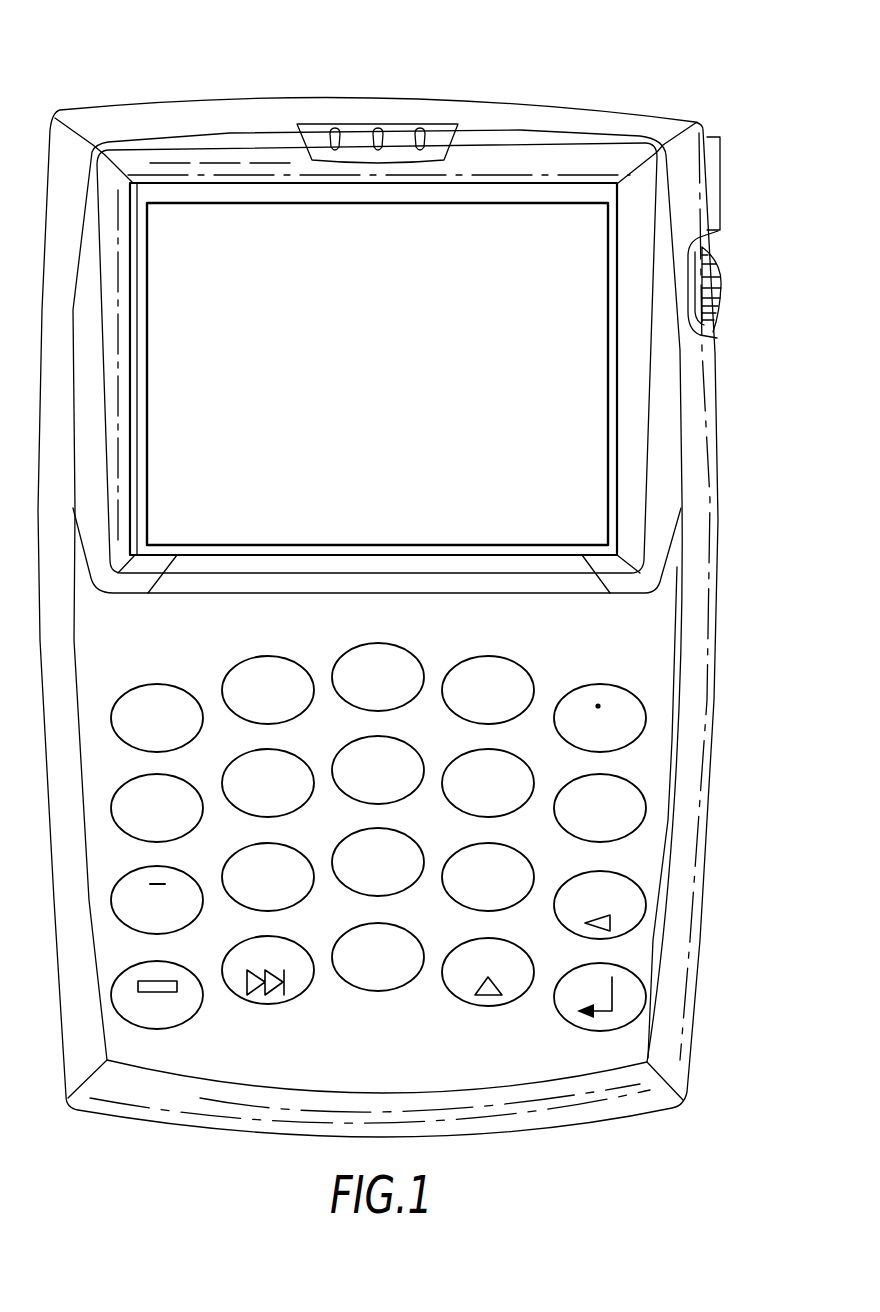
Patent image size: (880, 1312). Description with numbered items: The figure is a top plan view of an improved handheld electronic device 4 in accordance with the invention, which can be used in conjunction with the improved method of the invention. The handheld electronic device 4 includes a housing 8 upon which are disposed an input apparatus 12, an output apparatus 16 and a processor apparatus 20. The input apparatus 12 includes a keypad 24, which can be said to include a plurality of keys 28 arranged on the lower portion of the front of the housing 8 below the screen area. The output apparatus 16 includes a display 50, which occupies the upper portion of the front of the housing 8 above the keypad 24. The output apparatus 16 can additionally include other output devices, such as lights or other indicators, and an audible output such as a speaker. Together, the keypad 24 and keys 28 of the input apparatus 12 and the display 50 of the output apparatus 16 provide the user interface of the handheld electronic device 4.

The handheld electronic device 4 is at (412, 571).
The housing 8 is at (378, 590).
The input apparatus 12 is at (750, 596).
The output apparatus 16 is at (342, 374).
The processor apparatus 20 is at (379, 823).
The keypad 24 is at (655, 775).
The keys 28 is at (374, 775).
The display 50 is at (325, 374).